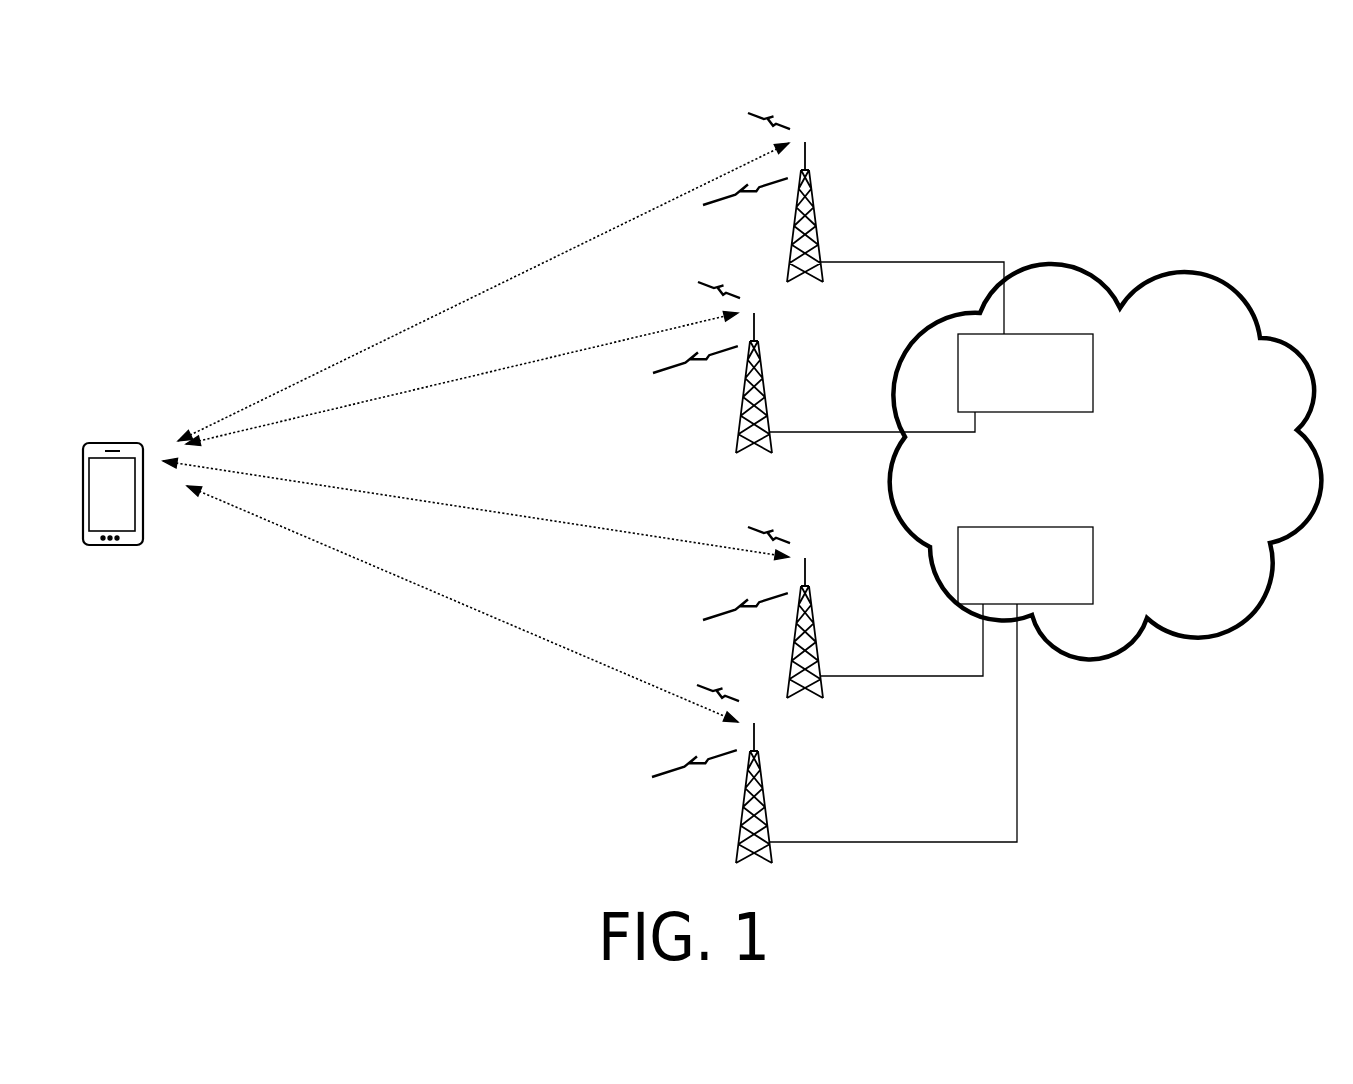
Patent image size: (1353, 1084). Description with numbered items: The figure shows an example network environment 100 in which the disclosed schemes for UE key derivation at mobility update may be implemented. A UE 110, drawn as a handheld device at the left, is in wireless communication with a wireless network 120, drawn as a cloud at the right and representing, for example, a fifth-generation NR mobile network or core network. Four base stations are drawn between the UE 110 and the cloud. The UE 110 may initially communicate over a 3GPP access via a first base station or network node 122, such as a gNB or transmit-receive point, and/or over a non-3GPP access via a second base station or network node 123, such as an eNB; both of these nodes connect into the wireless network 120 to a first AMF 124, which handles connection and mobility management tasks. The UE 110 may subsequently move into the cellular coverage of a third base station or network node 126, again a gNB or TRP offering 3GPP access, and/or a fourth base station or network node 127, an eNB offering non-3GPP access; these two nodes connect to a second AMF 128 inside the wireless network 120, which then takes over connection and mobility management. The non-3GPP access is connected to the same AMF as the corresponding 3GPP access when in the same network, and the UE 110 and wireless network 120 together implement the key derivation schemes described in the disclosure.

The network environment 100 is at (682, 80).
The UE 110 is at (110, 442).
The wireless network 120 is at (1083, 486).
The first base station or network node 122 is at (815, 233).
The second base station or network node 123 is at (765, 403).
The first AMF 124 is at (1007, 396).
The third base station or network node 126 is at (813, 647).
The fourth base station or network node 127 is at (762, 817).
The second AMF 128 is at (1007, 590).